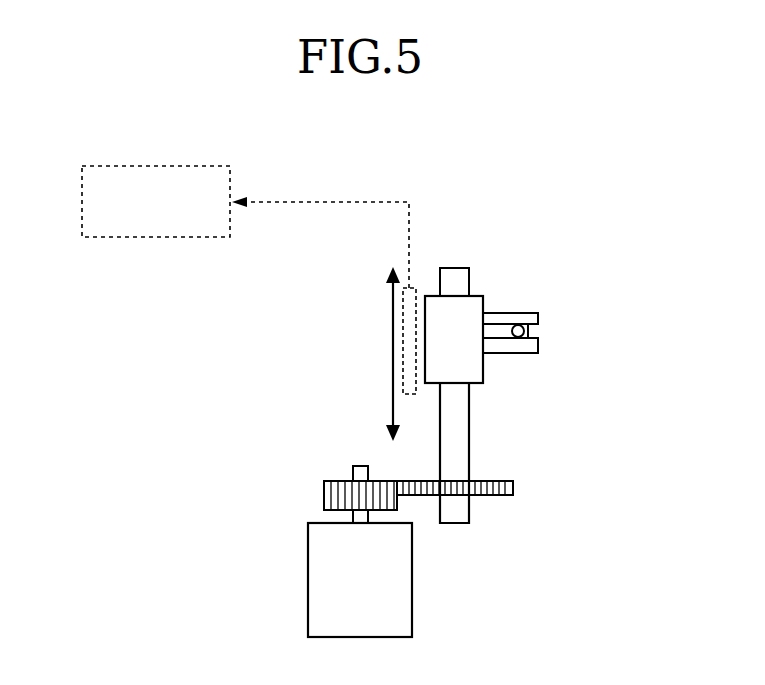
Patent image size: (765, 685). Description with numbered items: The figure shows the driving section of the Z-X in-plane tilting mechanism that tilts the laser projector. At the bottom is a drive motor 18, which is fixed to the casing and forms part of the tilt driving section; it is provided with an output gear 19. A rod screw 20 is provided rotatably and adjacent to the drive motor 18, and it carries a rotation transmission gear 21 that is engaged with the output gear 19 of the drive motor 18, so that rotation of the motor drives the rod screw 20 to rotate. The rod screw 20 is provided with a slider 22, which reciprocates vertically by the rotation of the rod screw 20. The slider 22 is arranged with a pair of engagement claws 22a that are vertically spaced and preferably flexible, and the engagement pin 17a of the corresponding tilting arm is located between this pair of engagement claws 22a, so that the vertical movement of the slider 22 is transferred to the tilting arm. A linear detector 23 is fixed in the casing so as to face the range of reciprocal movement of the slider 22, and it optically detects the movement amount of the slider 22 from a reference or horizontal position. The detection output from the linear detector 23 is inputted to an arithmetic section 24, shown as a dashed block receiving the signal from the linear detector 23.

The engagement pin 17a is at (525, 331).
The drive motor 18 is at (310, 597).
The output gear 19 is at (325, 480).
The rod screw 20 is at (463, 450).
The rotation transmission gear 21 is at (497, 497).
The slider 22 is at (478, 364).
The engagement claws 22a is at (516, 315).
The linear detector 23 is at (391, 330).
The arithmetic section 24 is at (142, 166).